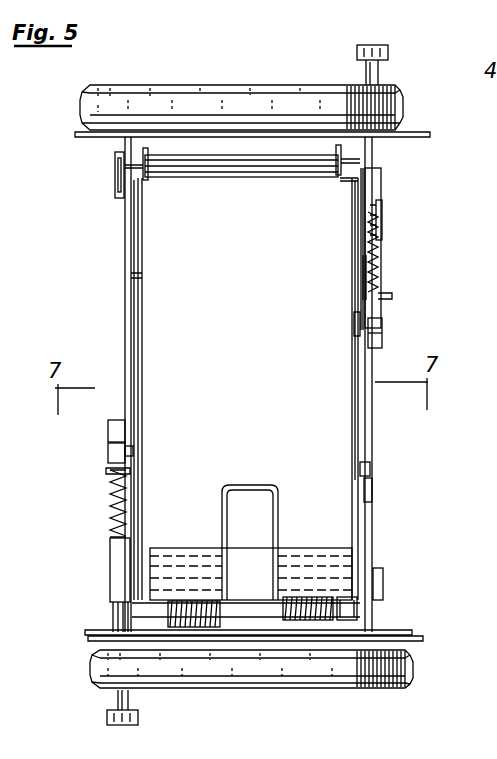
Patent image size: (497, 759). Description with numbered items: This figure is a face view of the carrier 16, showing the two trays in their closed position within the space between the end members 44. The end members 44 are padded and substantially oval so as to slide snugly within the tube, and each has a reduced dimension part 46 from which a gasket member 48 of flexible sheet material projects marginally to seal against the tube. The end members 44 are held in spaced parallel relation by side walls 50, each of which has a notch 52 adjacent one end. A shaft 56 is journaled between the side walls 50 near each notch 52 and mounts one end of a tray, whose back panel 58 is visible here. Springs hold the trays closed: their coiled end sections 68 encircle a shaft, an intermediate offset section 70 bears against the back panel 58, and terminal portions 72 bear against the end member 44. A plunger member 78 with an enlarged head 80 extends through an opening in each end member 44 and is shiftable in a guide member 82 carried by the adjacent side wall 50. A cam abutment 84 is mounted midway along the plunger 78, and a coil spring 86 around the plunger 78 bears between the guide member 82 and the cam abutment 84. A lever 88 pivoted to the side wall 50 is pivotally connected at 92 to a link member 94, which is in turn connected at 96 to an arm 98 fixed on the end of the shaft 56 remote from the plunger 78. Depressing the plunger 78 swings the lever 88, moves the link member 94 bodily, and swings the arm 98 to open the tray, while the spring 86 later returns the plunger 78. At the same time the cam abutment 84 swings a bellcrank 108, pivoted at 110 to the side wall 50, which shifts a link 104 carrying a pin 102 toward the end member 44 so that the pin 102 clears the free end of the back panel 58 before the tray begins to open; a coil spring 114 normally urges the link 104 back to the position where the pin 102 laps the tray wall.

The carrier 16 is at (112, 262).
The end members 44 is at (90, 107).
The reduced dimension part 46 is at (422, 640).
The gasket member 48 is at (402, 126).
The side walls 50 is at (125, 232).
The notch 52 is at (371, 468).
The shaft 56 is at (143, 178).
The back panel 58 is at (276, 219).
The coiled end sections 68 is at (190, 582).
The intermediate offset section 70 is at (258, 485).
The terminal portions 72 is at (193, 630).
The plunger member 78 is at (380, 70).
The enlarged head 80 is at (372, 46).
The guide member 82 is at (395, 295).
The cam abutment 84 is at (382, 186).
The coil spring 86 is at (380, 258).
The lever 88 is at (384, 330).
The pivotal connection 92 is at (354, 320).
The link member 94 is at (138, 332).
The pivotal connection 96 is at (372, 490).
The arm 98 is at (115, 180).
The pin 102 is at (348, 184).
The link 104 is at (366, 198).
The bellcrank 108 is at (383, 215).
The pivot 110 is at (384, 230).
The coil spring 114 is at (366, 283).